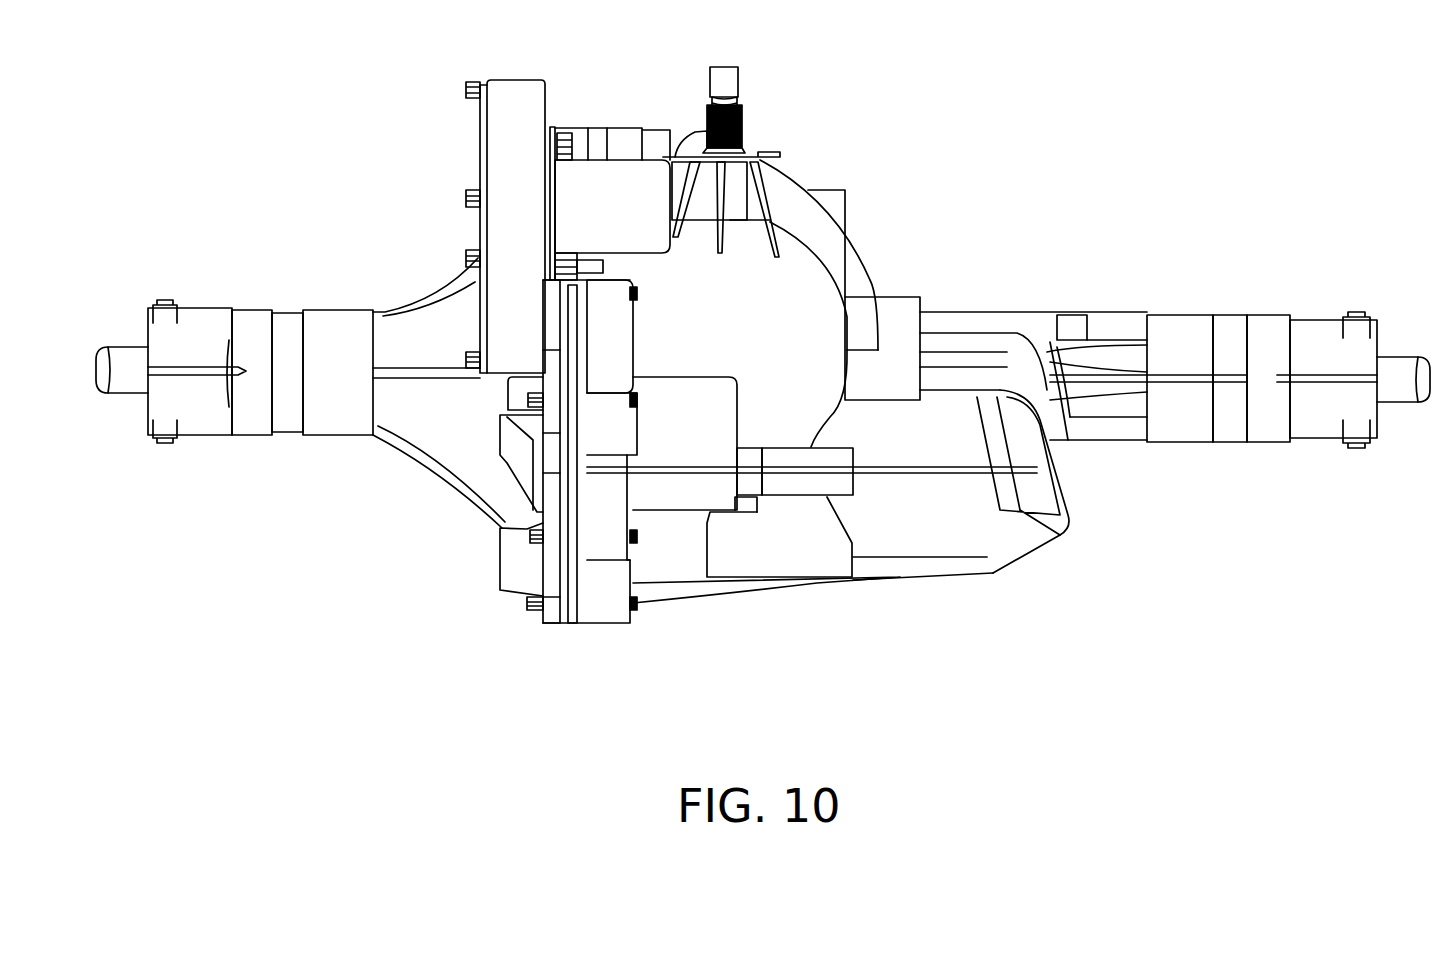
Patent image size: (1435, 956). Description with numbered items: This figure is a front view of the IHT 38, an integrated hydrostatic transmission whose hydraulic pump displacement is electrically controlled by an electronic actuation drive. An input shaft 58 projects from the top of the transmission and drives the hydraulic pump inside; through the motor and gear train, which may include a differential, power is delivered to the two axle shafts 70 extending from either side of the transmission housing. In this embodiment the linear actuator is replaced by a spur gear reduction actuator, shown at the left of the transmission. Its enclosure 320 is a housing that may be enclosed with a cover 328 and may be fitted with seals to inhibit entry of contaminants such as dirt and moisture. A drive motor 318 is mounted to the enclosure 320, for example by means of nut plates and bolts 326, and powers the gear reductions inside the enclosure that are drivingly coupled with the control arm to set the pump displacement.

The IHT 38 is at (993, 168).
The input shaft 58 is at (725, 67).
The axle shafts 70 is at (110, 347).
The drive motor 318 is at (656, 222).
The enclosure 320 is at (512, 80).
The bolts 326 is at (577, 282).
The cover 328 is at (480, 143).